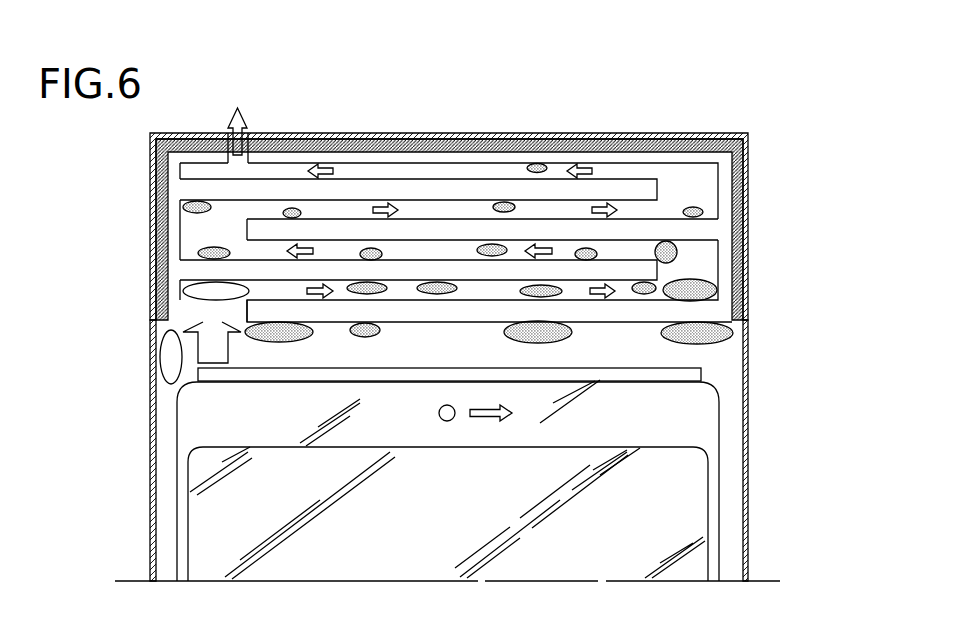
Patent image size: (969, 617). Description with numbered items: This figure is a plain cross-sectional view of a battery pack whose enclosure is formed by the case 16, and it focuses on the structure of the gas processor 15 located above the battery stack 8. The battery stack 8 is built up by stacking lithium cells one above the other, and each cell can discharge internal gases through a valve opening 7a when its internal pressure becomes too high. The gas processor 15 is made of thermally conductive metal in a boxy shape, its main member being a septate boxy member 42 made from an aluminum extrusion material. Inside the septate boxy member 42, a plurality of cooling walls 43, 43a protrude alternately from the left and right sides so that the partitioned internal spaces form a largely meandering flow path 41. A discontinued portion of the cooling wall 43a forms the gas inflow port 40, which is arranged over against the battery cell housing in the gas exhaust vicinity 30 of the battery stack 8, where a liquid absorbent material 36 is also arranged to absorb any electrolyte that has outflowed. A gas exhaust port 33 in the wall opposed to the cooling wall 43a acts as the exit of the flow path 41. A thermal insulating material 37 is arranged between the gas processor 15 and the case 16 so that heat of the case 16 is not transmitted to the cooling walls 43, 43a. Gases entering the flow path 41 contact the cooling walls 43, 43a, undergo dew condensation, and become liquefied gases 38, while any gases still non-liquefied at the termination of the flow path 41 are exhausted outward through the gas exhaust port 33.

The battery stack 8 is at (657, 488).
The valve opening 7a is at (445, 421).
The gas processor 15 is at (733, 182).
The case 16 is at (747, 415).
The gas exhaust vicinity 30 is at (410, 382).
The gas exhaust port 33 is at (231, 132).
The liquid absorbent material 36 is at (377, 373).
The thermal insulating material 37 is at (152, 177).
The liquefied gases 38 is at (511, 203).
The gas inflow port 40 is at (185, 326).
The flow path 41 is at (687, 266).
The septate boxy member 42 is at (178, 208).
The cooling wall 43 is at (367, 195).
The cooling wall 43a is at (698, 313).